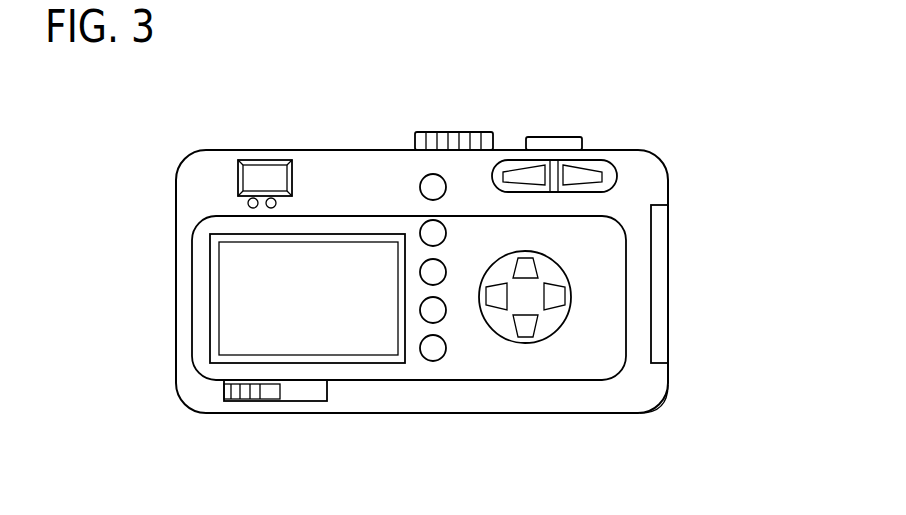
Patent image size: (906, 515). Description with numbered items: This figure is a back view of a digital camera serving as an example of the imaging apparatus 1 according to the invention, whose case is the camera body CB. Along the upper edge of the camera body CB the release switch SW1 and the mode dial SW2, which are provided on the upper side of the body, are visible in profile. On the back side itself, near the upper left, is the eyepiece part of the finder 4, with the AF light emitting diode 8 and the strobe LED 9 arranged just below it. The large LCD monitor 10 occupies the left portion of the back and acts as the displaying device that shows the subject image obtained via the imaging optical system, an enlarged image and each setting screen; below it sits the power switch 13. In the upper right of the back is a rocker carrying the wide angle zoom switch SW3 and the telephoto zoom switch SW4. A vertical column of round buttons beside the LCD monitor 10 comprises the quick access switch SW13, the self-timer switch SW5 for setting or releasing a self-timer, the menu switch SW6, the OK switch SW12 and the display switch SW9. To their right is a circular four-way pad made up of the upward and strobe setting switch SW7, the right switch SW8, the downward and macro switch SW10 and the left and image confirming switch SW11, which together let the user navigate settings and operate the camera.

The imaging apparatus 1 is at (150, 136).
The finder 4 is at (272, 168).
The AF light emitting diode 8 is at (249, 206).
The strobe LED 9 is at (270, 198).
The LCD monitor 10 is at (298, 327).
The power switch 13 is at (242, 400).
The release switch SW1 is at (555, 137).
The mode dial SW2 is at (466, 132).
The wide angle zoom switch SW3 is at (540, 170).
The telephoto zoom switch SW4 is at (608, 177).
The self-timer switch SW5 is at (437, 233).
The menu switch SW6 is at (437, 272).
The upward and strobe setting switch SW7 is at (525, 270).
The right switch SW8 is at (563, 300).
The display switch SW9 is at (428, 348).
The downward and macro switch SW10 is at (527, 325).
The left and image confirming switch SW11 is at (497, 298).
The OK switch SW12 is at (437, 312).
The quick access switch SW13 is at (437, 187).
The camera body CB is at (665, 402).